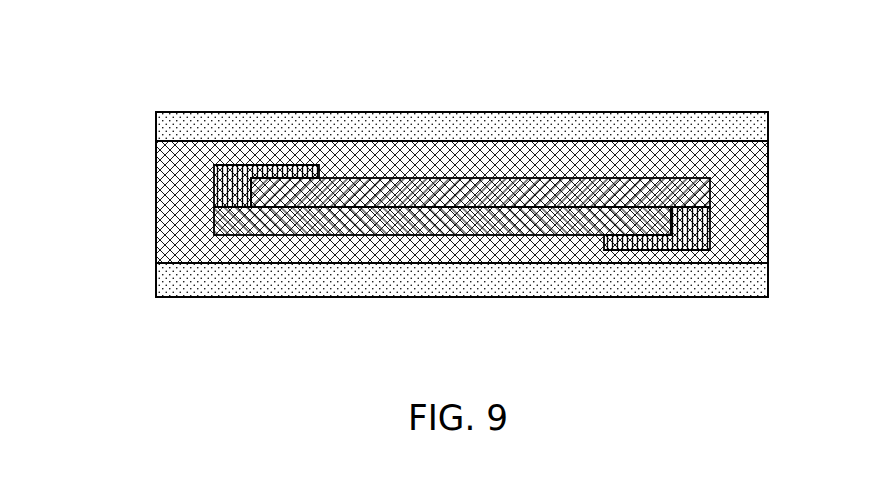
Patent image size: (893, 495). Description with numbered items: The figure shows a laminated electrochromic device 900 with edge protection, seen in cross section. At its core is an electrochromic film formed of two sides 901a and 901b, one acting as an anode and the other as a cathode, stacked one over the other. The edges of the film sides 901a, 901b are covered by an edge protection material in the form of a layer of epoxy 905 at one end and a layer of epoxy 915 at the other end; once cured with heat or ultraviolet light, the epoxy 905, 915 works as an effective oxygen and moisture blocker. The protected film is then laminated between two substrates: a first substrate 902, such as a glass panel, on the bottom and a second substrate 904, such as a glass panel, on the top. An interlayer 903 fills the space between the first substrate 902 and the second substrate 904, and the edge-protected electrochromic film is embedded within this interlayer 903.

The electrochromic device 900 is at (123, 140).
The electrochromic film side 901a is at (385, 195).
The electrochromic film side 901b is at (300, 225).
The first substrate 902 is at (212, 283).
The interlayer 903 is at (527, 165).
The second substrate 904 is at (307, 130).
The epoxy 905 is at (232, 190).
The epoxy 915 is at (690, 243).